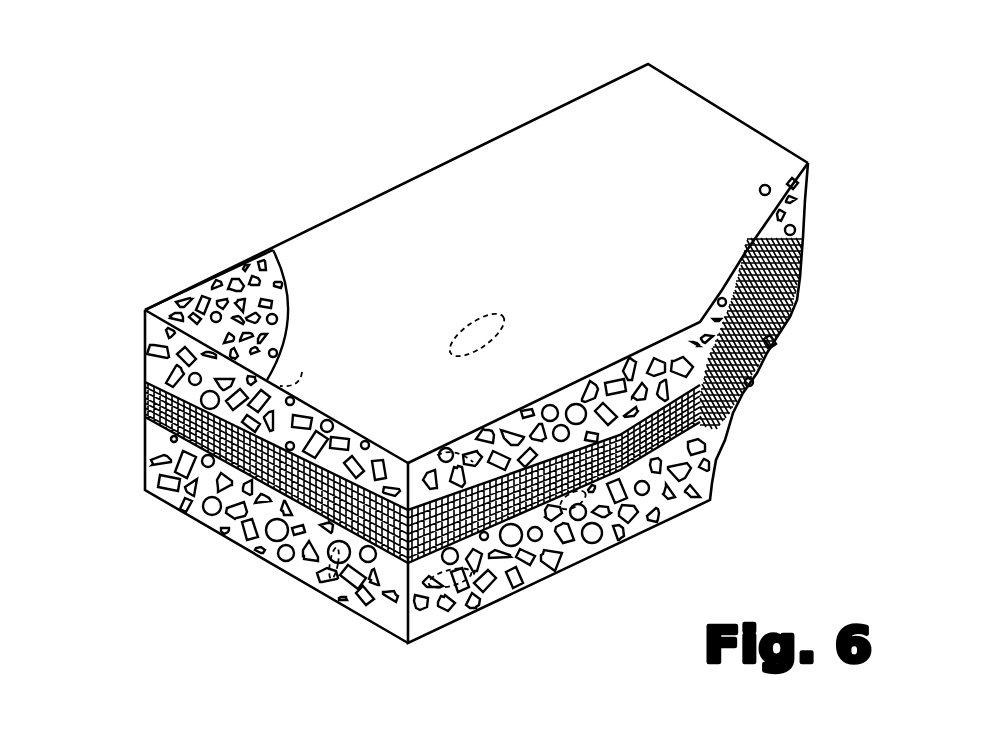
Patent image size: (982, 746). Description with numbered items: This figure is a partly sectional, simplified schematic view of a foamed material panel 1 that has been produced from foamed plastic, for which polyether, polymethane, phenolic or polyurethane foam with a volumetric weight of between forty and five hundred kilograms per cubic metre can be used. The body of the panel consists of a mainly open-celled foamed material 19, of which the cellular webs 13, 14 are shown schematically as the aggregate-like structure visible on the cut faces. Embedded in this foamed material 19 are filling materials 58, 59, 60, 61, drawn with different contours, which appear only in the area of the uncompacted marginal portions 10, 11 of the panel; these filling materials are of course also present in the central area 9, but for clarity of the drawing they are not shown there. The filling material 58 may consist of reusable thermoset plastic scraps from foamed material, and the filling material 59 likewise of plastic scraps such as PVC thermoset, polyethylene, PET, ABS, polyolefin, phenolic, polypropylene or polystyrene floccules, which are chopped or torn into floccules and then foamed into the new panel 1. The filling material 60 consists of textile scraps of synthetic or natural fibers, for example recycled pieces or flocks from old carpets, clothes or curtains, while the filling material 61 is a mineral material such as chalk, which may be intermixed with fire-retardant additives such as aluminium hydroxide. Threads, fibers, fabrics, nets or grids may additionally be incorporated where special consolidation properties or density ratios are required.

The foamed material panel 1 is at (812, 88).
The central area 9 is at (130, 392).
The uncompacted marginal portion 10 is at (331, 207).
The uncompacted marginal portion 11 is at (198, 528).
The cellular web 13 is at (193, 322).
The cellular web 14 is at (190, 320).
The foamed material 19 is at (196, 278).
The filling material 58 is at (481, 323).
The filling material 59 is at (467, 614).
The filling material 60 is at (302, 372).
The filling material 61 is at (471, 466).